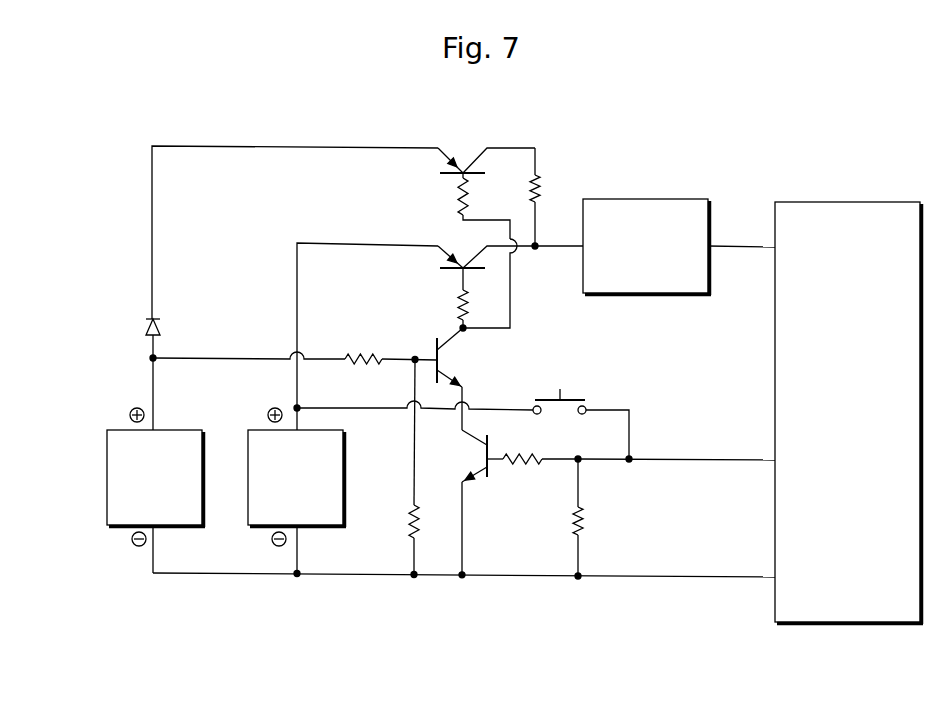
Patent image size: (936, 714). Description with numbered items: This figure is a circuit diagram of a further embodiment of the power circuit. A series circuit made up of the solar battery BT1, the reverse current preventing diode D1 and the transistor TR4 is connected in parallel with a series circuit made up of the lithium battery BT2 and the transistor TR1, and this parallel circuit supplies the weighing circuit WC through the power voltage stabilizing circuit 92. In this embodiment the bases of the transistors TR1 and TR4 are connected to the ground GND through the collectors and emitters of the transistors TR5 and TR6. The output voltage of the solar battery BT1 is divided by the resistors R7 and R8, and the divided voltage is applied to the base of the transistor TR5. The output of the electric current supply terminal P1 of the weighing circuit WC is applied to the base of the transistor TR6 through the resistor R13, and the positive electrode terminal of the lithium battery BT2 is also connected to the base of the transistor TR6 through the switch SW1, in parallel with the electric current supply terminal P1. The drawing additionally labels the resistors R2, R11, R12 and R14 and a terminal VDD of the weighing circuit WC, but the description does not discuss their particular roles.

The power voltage stabilizing circuit 92 is at (655, 199).
The weighing circuit WC is at (849, 426).
The solar battery BT1 is at (135, 477).
The lithium battery BT2 is at (316, 477).
The reverse current preventing diode D1 is at (140, 326).
The transistor TR1 is at (466, 262).
The transistor TR4 is at (486, 149).
The transistor TR5 is at (467, 379).
The transistor TR6 is at (487, 502).
The resistor R2 is at (478, 299).
The resistor R7 is at (363, 347).
The resistor R8 is at (400, 467).
The resistor R11 is at (487, 250).
The resistor R12 is at (551, 198).
The resistor R13 is at (532, 447).
The resistor R14 is at (596, 516).
The switch SW1 is at (581, 413).
The supply voltage terminal VDD is at (763, 246).
The electric current supply terminal P1 is at (690, 459).
The ground GND is at (464, 584).